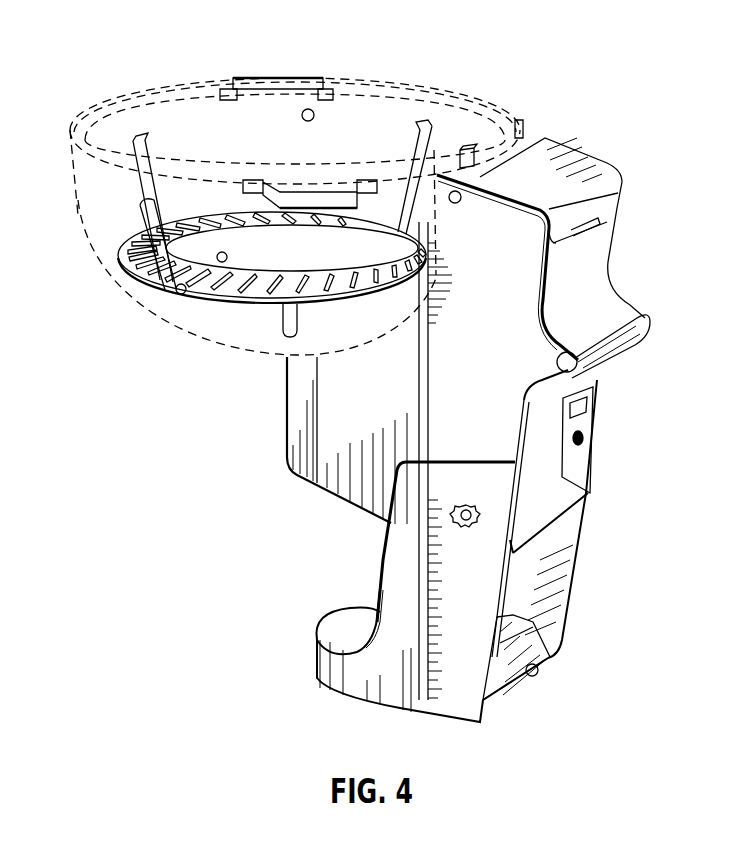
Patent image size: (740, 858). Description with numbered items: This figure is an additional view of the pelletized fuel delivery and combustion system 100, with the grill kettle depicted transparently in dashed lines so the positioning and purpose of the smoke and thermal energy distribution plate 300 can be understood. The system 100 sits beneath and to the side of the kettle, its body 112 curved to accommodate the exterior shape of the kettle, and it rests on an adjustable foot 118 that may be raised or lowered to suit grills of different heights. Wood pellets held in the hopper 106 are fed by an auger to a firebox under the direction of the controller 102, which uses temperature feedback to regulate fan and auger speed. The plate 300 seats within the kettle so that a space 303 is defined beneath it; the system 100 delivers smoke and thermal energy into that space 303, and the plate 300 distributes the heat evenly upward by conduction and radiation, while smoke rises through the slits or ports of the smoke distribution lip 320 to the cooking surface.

The pelletized fuel delivery and combustion system 100 is at (548, 82).
The controller 102 is at (580, 452).
The hopper 106 is at (578, 168).
The body 112 is at (350, 447).
The foot 118 is at (457, 710).
The smoke and thermal energy distribution plate 300 is at (327, 261).
The space 303 is at (218, 318).
The smoke distribution lip 320 is at (178, 290).